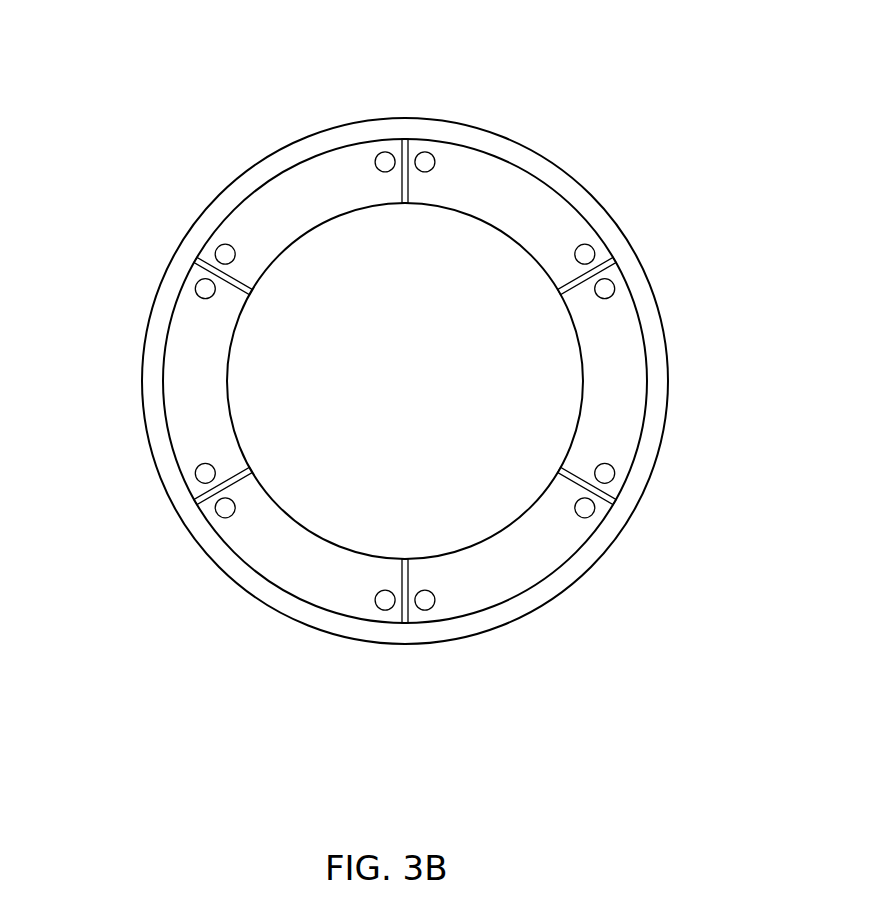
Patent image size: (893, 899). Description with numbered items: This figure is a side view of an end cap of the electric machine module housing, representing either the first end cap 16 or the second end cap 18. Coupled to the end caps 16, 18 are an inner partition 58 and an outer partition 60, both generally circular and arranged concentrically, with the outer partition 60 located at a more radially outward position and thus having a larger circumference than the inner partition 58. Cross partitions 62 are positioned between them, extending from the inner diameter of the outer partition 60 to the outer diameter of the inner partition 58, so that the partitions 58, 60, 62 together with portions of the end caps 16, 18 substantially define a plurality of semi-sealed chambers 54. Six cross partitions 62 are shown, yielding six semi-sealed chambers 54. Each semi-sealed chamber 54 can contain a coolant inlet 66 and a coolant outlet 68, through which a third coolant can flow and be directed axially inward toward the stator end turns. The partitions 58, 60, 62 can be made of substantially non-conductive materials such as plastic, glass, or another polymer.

The first end cap 16 is at (432, 329).
The second end cap 18 is at (603, 83).
The semi-sealed chambers 54 is at (300, 199).
The inner partition 58 is at (582, 388).
The outer partition 60 is at (535, 182).
The cross partitions 62 is at (407, 185).
The coolant inlet 66 is at (385, 160).
The coolant outlet 68 is at (426, 160).